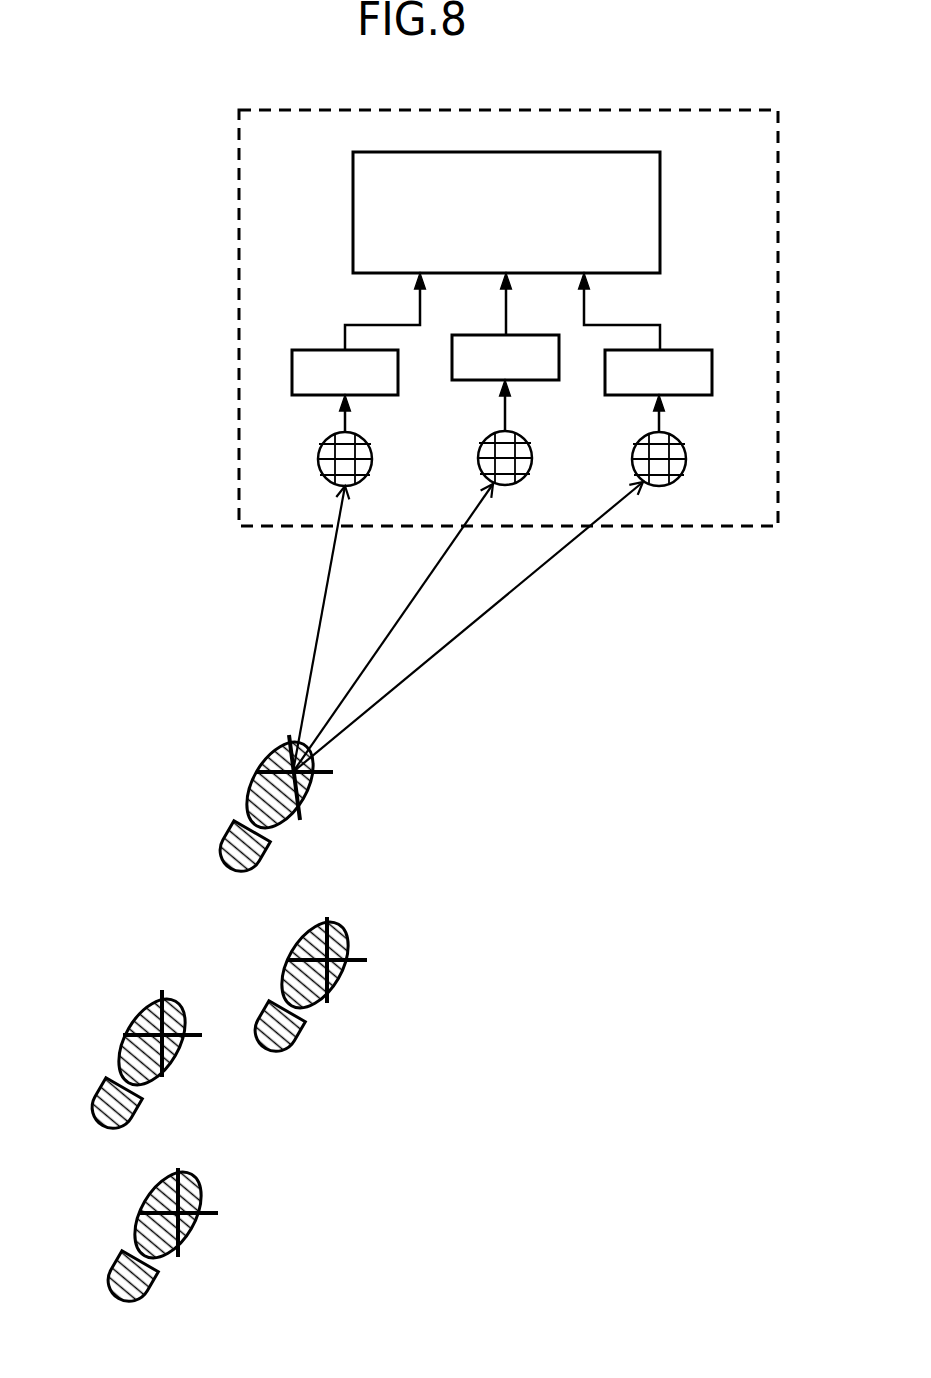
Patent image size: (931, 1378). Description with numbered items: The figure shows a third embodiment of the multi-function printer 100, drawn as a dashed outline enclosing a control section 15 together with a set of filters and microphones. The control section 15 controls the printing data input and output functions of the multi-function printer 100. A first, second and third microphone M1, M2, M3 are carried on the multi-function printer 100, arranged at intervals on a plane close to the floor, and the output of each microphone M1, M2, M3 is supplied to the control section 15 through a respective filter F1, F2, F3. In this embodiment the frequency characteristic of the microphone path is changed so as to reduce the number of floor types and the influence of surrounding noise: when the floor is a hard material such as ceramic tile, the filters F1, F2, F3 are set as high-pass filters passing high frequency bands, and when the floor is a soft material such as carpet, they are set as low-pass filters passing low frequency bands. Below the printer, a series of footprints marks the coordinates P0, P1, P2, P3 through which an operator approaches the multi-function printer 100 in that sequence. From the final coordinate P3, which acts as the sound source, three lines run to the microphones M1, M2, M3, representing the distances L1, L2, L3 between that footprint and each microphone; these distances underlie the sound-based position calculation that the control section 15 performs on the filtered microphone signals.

The multi-function printer 100 is at (508, 289).
The control section 15 is at (661, 208).
The filter F1 is at (359, 334).
The filter F2 is at (505, 326).
The filter F3 is at (646, 334).
The first microphone M1 is at (361, 454).
The second microphone M2 is at (519, 446).
The third microphone M3 is at (674, 454).
The distance L1 is at (326, 629).
The distance L2 is at (393, 628).
The distance L3 is at (468, 627).
The footprint coordinate P0 is at (174, 1237).
The footprint coordinate P1 is at (141, 1064).
The footprint coordinate P2 is at (310, 987).
The footprint coordinate P3 is at (277, 807).